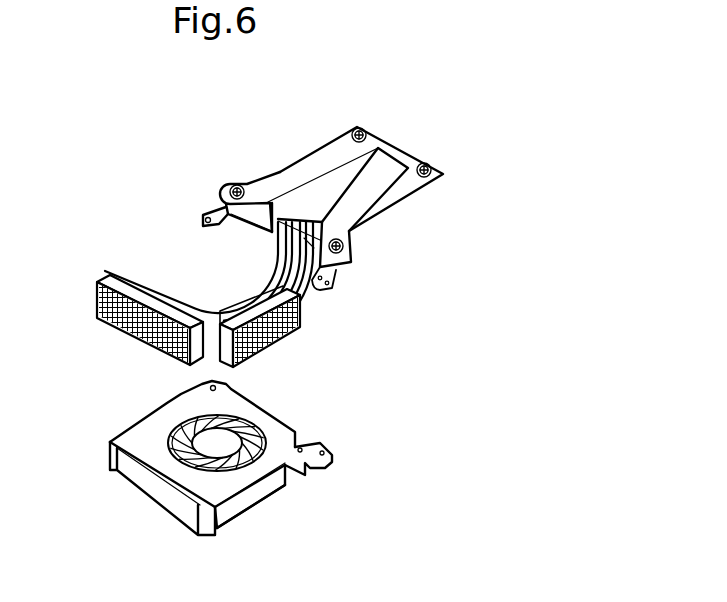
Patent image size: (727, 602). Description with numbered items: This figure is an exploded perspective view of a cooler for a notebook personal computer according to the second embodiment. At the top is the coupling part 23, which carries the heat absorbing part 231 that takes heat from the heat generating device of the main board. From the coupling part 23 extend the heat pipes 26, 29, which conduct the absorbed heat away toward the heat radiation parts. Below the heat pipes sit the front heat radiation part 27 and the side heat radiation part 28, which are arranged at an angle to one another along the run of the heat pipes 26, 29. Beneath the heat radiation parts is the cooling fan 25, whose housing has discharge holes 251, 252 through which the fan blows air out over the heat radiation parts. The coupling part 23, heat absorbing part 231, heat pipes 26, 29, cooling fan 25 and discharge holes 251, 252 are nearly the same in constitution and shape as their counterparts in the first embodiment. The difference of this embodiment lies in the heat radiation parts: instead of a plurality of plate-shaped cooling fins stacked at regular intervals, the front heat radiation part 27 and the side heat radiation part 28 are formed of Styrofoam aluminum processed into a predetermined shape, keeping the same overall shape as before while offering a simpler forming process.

The coupling part 23 is at (288, 182).
The heat absorbing part 231 is at (338, 186).
The cooling fan 25 is at (195, 483).
The discharge hole 251 is at (153, 486).
The discharge hole 252 is at (229, 509).
The heat pipe 26 is at (114, 270).
The front heat radiation part 27 is at (97, 318).
The side heat radiation part 28 is at (303, 311).
The heat pipe 29 is at (352, 266).